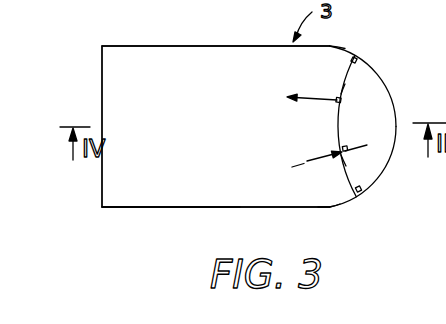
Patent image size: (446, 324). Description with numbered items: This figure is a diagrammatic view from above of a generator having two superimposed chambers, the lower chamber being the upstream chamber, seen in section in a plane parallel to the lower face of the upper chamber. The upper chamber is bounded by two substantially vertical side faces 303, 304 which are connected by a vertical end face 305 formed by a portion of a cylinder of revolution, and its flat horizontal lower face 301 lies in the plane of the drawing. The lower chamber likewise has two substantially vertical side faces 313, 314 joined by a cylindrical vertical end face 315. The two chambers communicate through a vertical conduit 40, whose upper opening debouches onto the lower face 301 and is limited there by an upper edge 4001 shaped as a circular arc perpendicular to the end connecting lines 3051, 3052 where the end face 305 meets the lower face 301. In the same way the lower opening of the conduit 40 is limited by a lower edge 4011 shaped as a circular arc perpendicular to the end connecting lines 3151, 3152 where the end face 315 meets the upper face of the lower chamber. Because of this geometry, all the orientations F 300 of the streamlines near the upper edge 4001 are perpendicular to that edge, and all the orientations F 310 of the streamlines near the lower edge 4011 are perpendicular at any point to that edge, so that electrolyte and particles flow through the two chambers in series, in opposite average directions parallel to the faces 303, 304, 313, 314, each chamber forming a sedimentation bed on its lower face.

The lower face of the upper chamber 301 is at (118, 60).
The side face of the upper chamber 303 is at (177, 205).
The side face of the upper chamber 304 is at (217, 47).
The side face of the lower chamber 313 is at (242, 208).
The side face of the lower chamber 314 is at (236, 44).
The end face of the upper chamber 305 is at (378, 67).
The end face of the lower chamber 315 is at (379, 178).
The end connecting line 3051 is at (340, 204).
The end connecting line 3052 is at (351, 58).
The end connecting line 3151 is at (330, 207).
The end connecting line 3152 is at (337, 47).
The vertical conduit 40 is at (382, 115).
The upper edge 4001 is at (346, 166).
The lower edge 4011 is at (345, 84).
The orientations of the streamlines near the upper edge 300 is at (307, 109).
The orientations of the streamlines near the lower edge 310 is at (320, 153).